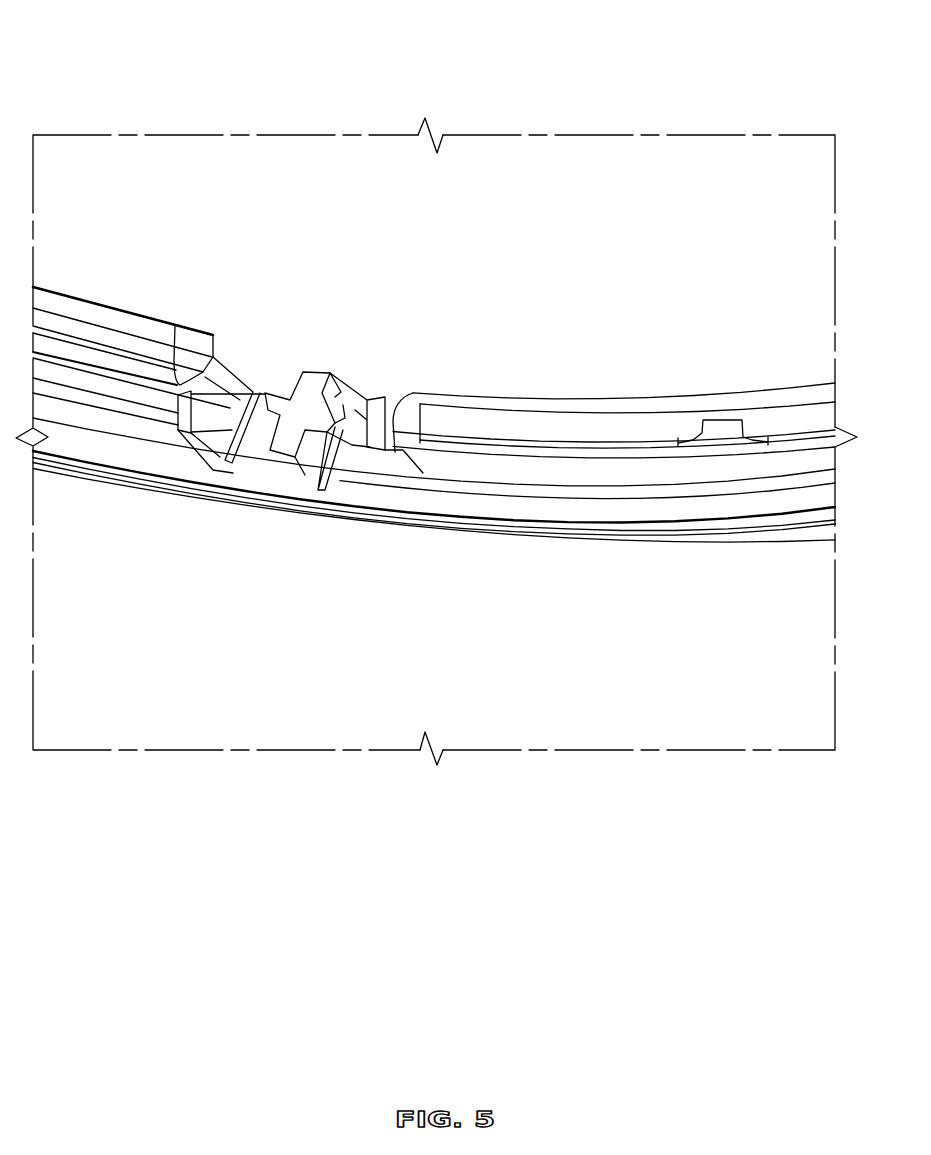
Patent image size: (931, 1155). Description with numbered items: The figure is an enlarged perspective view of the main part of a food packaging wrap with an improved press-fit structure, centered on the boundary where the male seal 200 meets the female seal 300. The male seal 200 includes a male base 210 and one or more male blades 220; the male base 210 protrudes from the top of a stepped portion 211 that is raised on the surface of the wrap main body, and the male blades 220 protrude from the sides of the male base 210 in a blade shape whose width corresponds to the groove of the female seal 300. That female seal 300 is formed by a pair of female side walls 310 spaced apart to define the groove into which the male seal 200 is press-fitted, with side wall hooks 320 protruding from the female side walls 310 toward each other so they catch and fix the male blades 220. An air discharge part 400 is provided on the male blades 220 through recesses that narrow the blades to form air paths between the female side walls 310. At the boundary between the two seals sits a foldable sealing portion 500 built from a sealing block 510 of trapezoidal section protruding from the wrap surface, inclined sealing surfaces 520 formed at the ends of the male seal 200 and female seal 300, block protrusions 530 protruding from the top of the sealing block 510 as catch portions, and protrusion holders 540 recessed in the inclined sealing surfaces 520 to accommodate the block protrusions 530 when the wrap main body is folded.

The male seal 200 is at (705, 250).
The male base 210 is at (533, 405).
The stepped portion 211 is at (600, 510).
The male blades 220 is at (598, 433).
The female seal 300 is at (232, 72).
The female side walls 310 is at (93, 320).
The side wall hooks 320 is at (180, 323).
The air discharge part 400 is at (727, 434).
The foldable sealing portion 500 is at (127, 845).
The sealing block 510 is at (263, 470).
The inclined sealing surfaces 520 is at (198, 440).
The block protrusions 530 is at (300, 467).
The protrusion holders 540 is at (240, 440).